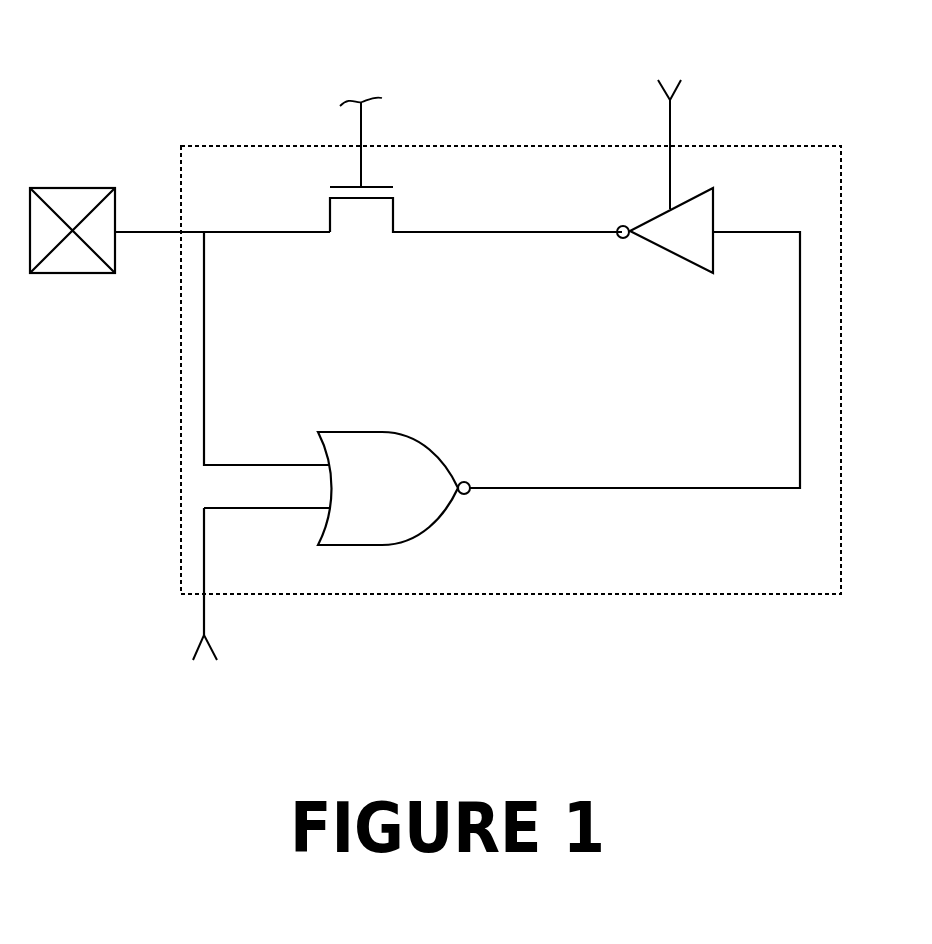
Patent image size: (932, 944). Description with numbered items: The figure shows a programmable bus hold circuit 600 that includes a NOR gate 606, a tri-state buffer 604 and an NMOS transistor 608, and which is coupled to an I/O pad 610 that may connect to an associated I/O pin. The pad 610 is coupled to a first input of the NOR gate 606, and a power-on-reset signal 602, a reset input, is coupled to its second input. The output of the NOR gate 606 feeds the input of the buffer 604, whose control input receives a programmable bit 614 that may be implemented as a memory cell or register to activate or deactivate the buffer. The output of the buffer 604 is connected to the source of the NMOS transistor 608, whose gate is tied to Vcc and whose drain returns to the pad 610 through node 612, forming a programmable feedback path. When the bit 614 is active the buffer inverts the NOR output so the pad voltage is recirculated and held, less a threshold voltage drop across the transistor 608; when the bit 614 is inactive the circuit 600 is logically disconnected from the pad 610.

The programmable bus hold circuit 600 is at (841, 188).
The power-on-reset signal 602 is at (205, 623).
The tri-state buffer 604 is at (635, 338).
The NOR gate 606 is at (337, 488).
The NMOS transistor 608 is at (451, 188).
The I/O pad 610 is at (35, 273).
The internal node / wire from pad 612 is at (158, 232).
The programmable bit 614 is at (670, 100).